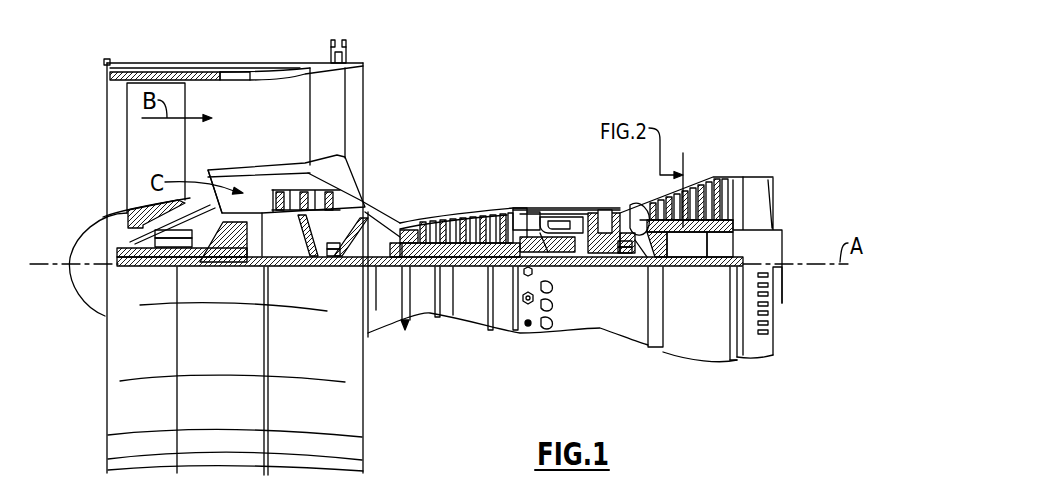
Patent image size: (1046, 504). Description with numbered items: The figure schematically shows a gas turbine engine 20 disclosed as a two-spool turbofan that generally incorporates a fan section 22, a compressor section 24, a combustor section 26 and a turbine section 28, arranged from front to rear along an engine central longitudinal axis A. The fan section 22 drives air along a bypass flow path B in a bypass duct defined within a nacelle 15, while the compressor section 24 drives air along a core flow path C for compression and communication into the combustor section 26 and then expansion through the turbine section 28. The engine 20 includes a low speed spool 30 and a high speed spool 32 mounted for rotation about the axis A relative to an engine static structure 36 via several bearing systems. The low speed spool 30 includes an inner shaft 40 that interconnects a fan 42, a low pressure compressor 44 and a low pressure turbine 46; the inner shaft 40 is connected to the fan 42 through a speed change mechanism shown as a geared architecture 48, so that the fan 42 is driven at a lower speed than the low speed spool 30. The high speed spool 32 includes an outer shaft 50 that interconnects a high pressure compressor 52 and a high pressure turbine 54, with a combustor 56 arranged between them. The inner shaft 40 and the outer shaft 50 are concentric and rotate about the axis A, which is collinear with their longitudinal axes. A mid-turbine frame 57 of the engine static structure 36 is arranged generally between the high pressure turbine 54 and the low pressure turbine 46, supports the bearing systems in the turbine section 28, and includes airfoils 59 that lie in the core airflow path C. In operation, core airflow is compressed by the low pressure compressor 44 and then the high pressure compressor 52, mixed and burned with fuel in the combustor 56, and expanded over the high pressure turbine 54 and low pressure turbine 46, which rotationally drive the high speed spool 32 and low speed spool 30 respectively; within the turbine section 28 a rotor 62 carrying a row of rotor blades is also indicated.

The nacelle 15 is at (233, 62).
The gas turbine engine 20 is at (564, 96).
The fan section 22 is at (183, 58).
The compressor section 24 is at (399, 189).
The combustor section 26 is at (555, 186).
The turbine section 28 is at (670, 155).
The low speed spool 30 is at (473, 277).
The high speed spool 32 is at (507, 213).
The engine static structure 36 is at (503, 339).
The inner shaft 40 is at (377, 268).
The fan 42 is at (170, 157).
The low pressure compressor 44 is at (340, 178).
The low pressure turbine 46 is at (690, 178).
The geared architecture 48 is at (240, 258).
The outer shaft 50 is at (562, 266).
The high pressure compressor 52 is at (460, 217).
The high pressure turbine 54 is at (600, 208).
The combustor 56 is at (556, 218).
The mid-turbine frame 57 is at (648, 180).
The airfoils 59 is at (657, 235).
The rotor 62 is at (708, 266).